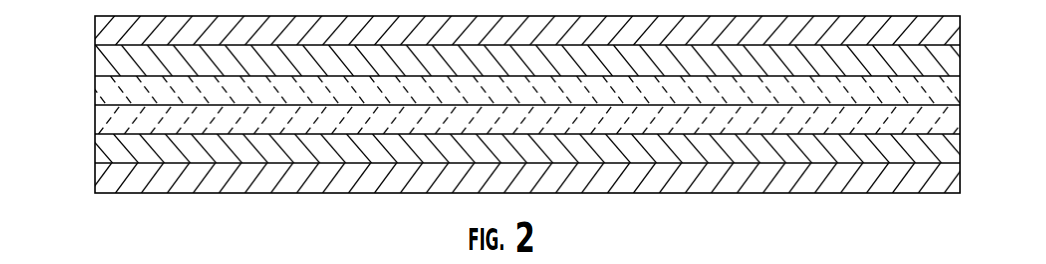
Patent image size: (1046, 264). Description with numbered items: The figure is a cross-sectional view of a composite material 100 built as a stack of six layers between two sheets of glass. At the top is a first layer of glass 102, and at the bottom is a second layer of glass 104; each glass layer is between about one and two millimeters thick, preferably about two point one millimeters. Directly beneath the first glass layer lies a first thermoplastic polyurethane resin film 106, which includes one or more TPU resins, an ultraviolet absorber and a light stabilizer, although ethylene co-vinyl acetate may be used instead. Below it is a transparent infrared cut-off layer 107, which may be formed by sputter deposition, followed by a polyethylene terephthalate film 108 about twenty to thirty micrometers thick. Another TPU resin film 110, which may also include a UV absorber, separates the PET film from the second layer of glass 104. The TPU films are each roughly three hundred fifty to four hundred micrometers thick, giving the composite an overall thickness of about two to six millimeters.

The composite material 100 is at (84, 95).
The first layer of glass 102 is at (546, 42).
The TPU resin film 106 is at (546, 74).
The IR cut-off layer 107 is at (546, 102).
The PET film 108 is at (546, 132).
The TPU resin film 110 is at (546, 160).
The second layer of glass 104 is at (546, 190).